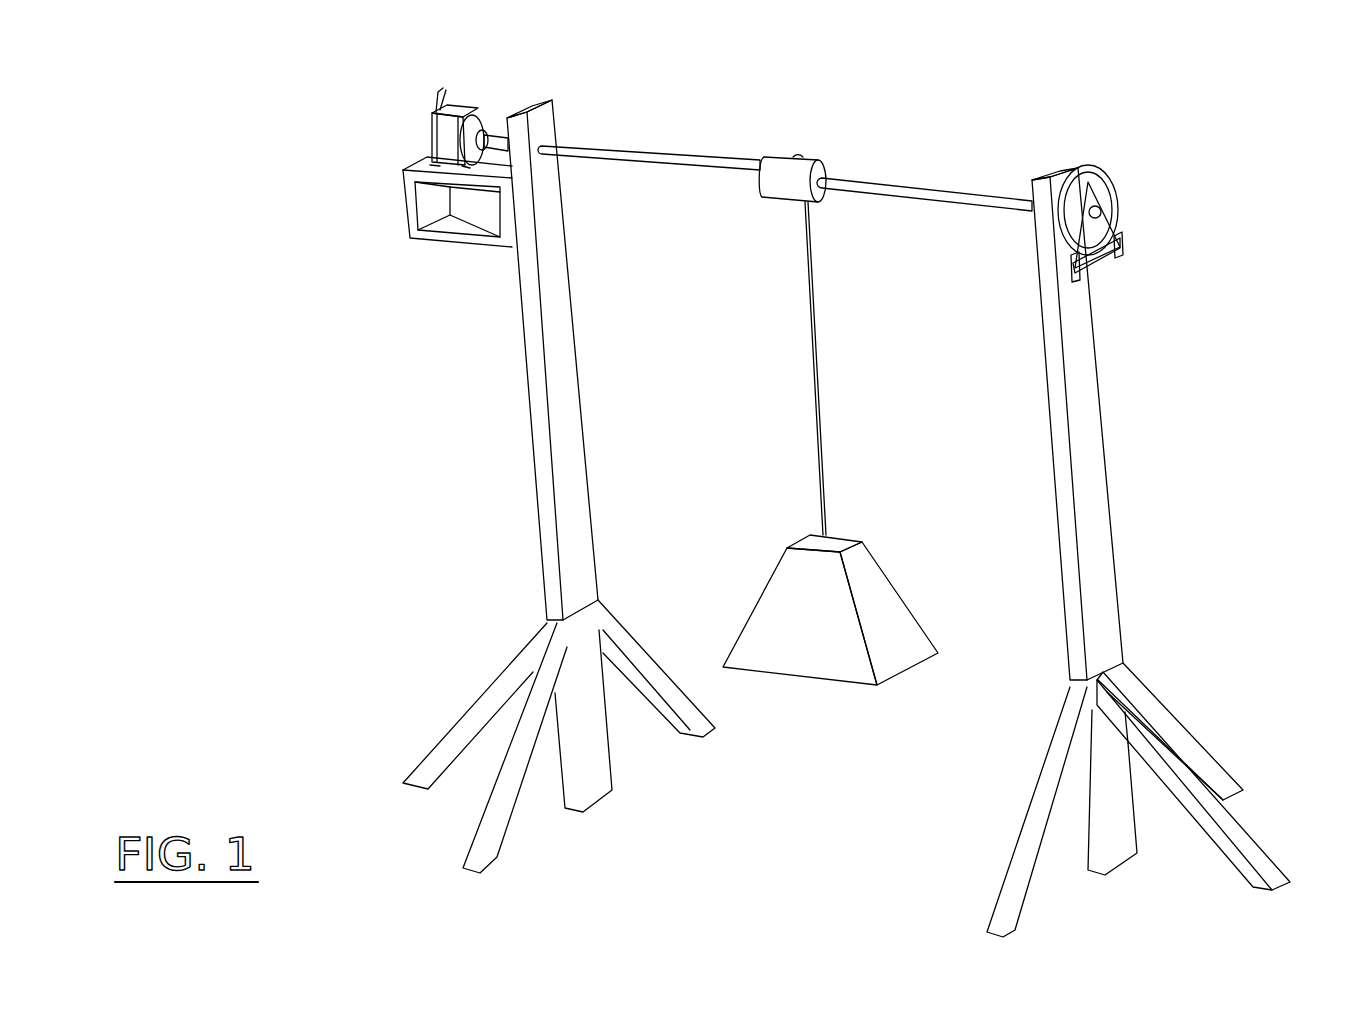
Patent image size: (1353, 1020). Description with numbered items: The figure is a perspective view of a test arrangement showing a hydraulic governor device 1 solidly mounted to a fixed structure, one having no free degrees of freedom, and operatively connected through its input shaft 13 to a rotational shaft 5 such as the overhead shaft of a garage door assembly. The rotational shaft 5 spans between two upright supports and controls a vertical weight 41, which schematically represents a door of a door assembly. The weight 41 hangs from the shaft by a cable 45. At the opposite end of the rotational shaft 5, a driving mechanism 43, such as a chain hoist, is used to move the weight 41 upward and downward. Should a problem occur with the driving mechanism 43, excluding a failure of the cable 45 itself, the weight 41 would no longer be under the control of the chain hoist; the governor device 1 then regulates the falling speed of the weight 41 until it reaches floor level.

The hydraulic governor device 1 is at (418, 137).
The input shaft 13 is at (493, 137).
The rotational shaft 5 is at (688, 166).
The vertical weight 41 is at (818, 662).
The driving mechanism 43 is at (1116, 221).
The cable 45 is at (818, 366).